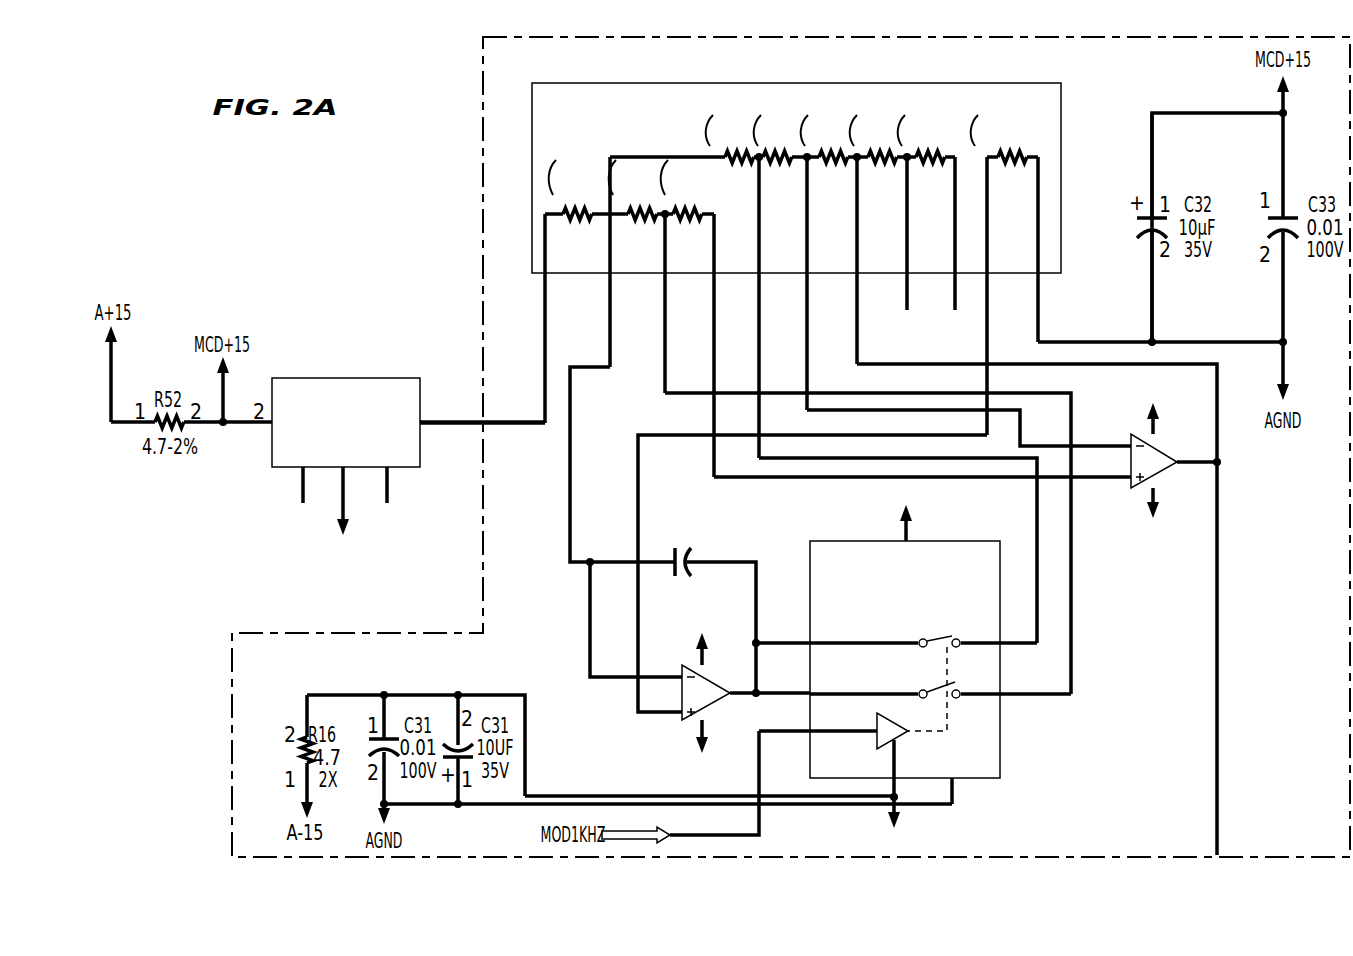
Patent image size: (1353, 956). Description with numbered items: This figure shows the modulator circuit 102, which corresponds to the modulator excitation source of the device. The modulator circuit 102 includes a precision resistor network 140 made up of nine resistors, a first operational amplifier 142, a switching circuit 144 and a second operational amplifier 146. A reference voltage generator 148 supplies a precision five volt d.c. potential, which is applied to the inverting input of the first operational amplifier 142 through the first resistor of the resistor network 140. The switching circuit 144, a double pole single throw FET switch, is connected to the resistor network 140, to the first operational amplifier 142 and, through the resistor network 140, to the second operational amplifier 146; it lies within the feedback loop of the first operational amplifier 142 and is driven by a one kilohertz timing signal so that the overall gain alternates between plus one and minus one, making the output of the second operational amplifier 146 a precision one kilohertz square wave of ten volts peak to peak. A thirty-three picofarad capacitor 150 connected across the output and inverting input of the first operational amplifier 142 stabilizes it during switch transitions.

The modulator circuit 102 is at (483, 200).
The precision resistor network 140 is at (1061, 112).
The first operational amplifier 142 is at (673, 731).
The switching circuit 144 is at (1000, 748).
The second operational amplifier 146 is at (1105, 516).
The reference voltage generator 148 is at (398, 378).
The capacitor 150 is at (705, 552).